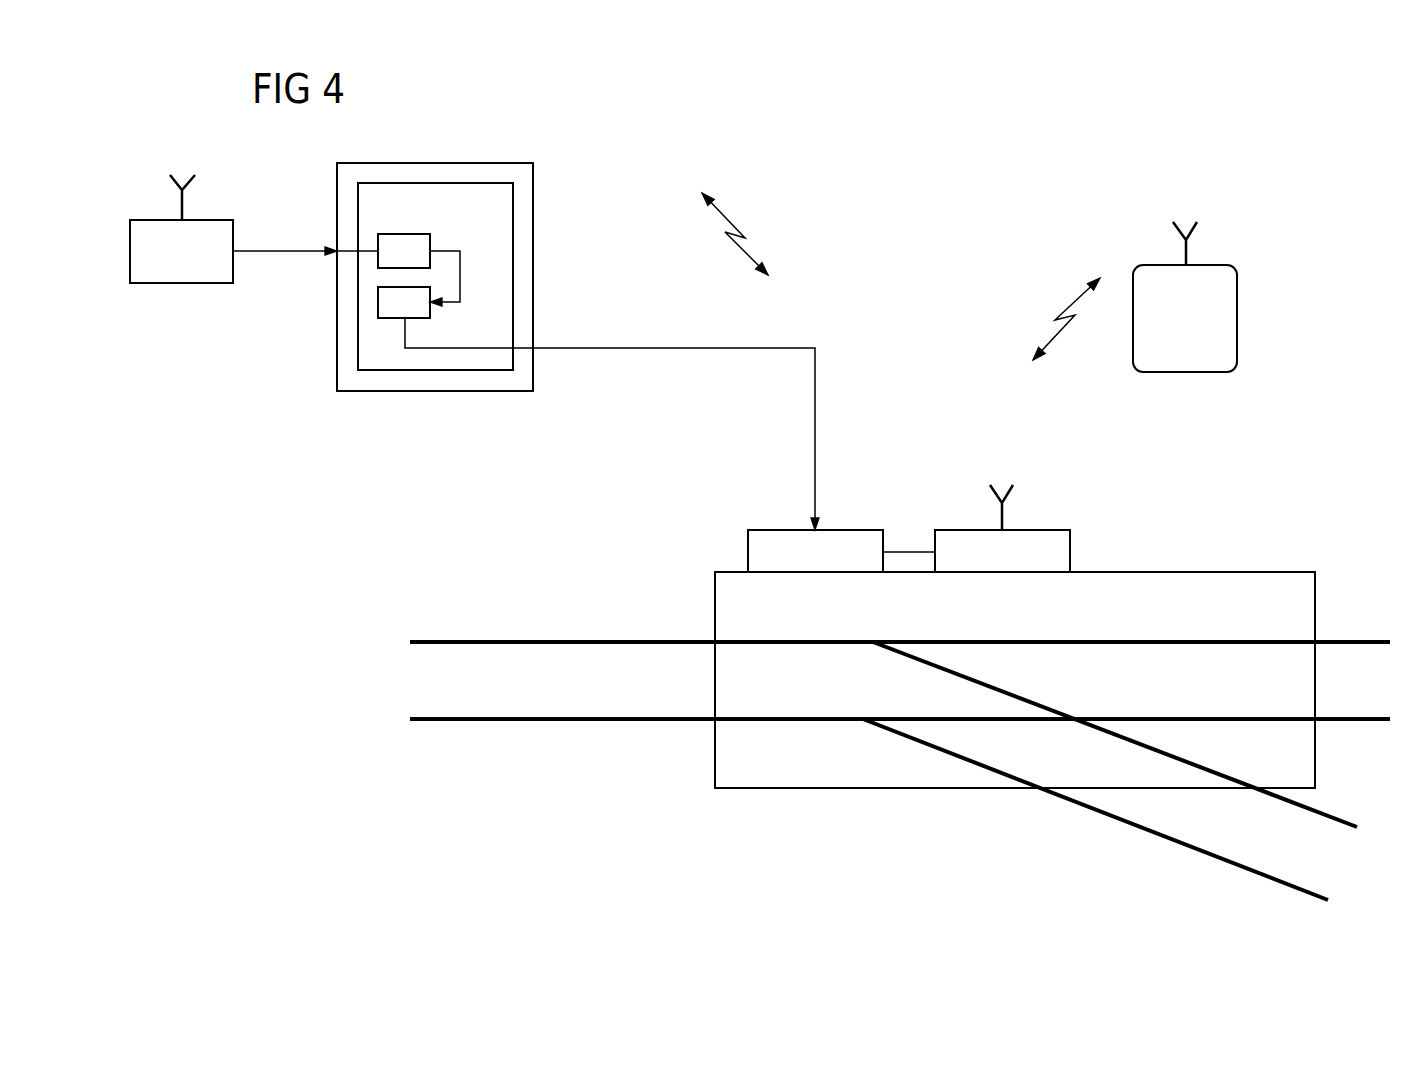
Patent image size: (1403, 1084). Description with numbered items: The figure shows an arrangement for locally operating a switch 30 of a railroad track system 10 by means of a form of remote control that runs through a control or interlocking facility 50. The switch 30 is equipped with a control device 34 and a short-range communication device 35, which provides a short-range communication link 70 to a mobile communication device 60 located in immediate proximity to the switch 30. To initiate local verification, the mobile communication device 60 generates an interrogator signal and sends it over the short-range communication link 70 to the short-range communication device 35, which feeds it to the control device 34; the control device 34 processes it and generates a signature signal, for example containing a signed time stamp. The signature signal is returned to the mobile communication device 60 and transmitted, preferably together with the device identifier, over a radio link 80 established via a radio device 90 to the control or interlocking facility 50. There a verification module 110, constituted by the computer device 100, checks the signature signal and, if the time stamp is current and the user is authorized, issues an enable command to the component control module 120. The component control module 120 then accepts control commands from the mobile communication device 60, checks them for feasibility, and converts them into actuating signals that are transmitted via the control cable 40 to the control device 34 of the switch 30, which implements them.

The railroad track system 10 is at (485, 719).
The switch 30 is at (715, 605).
The control device 34 is at (773, 530).
The short-range communication device 35 is at (1040, 530).
The control cable 40 is at (650, 348).
The control or interlocking facility 50 is at (533, 169).
The mobile communication device 60 is at (1237, 328).
The short-range communication link 70 is at (1057, 333).
The radio link 80 is at (750, 252).
The radio device 90 is at (182, 283).
The computer device 100 is at (513, 200).
The verification module 110 is at (430, 240).
The component control module 120 is at (430, 312).